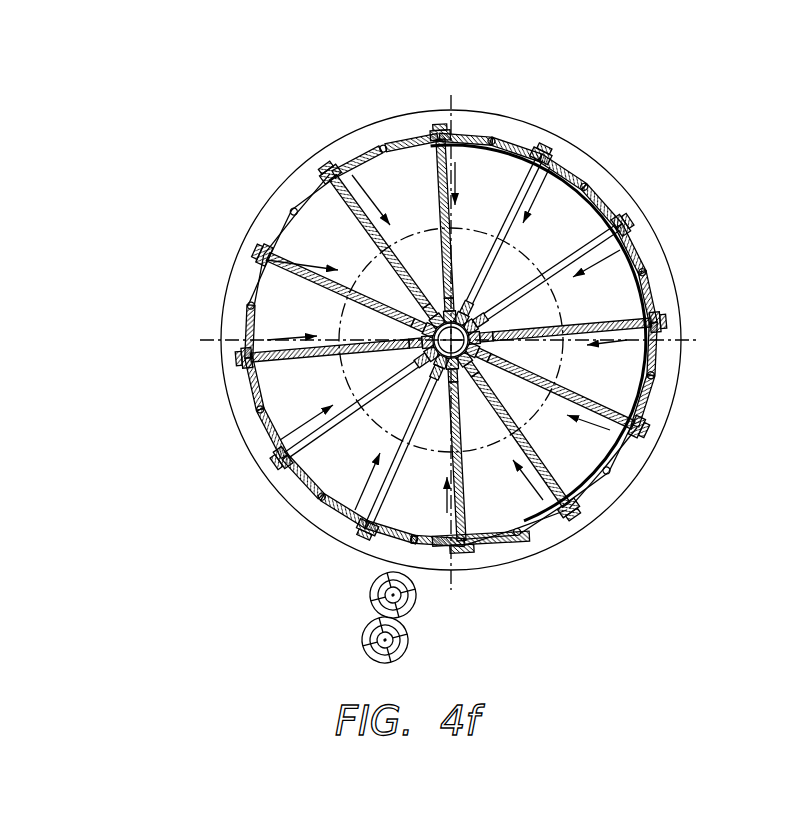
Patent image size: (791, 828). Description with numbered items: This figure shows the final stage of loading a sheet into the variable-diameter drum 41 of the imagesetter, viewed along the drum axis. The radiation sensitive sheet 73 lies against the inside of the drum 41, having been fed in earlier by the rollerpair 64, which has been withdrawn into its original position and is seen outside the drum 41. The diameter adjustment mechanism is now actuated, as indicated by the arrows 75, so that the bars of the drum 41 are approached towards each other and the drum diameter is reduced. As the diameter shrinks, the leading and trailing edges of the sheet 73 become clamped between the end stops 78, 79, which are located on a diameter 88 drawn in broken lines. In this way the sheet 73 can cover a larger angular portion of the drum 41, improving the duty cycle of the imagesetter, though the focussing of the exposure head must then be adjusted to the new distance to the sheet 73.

The drum 41 is at (582, 133).
The sheet 73 is at (517, 228).
The arrows 75 is at (492, 335).
The diameter 88 is at (563, 352).
The end stop 79 is at (345, 551).
The end stop 78 is at (476, 564).
The rollerpair 64 is at (345, 626).